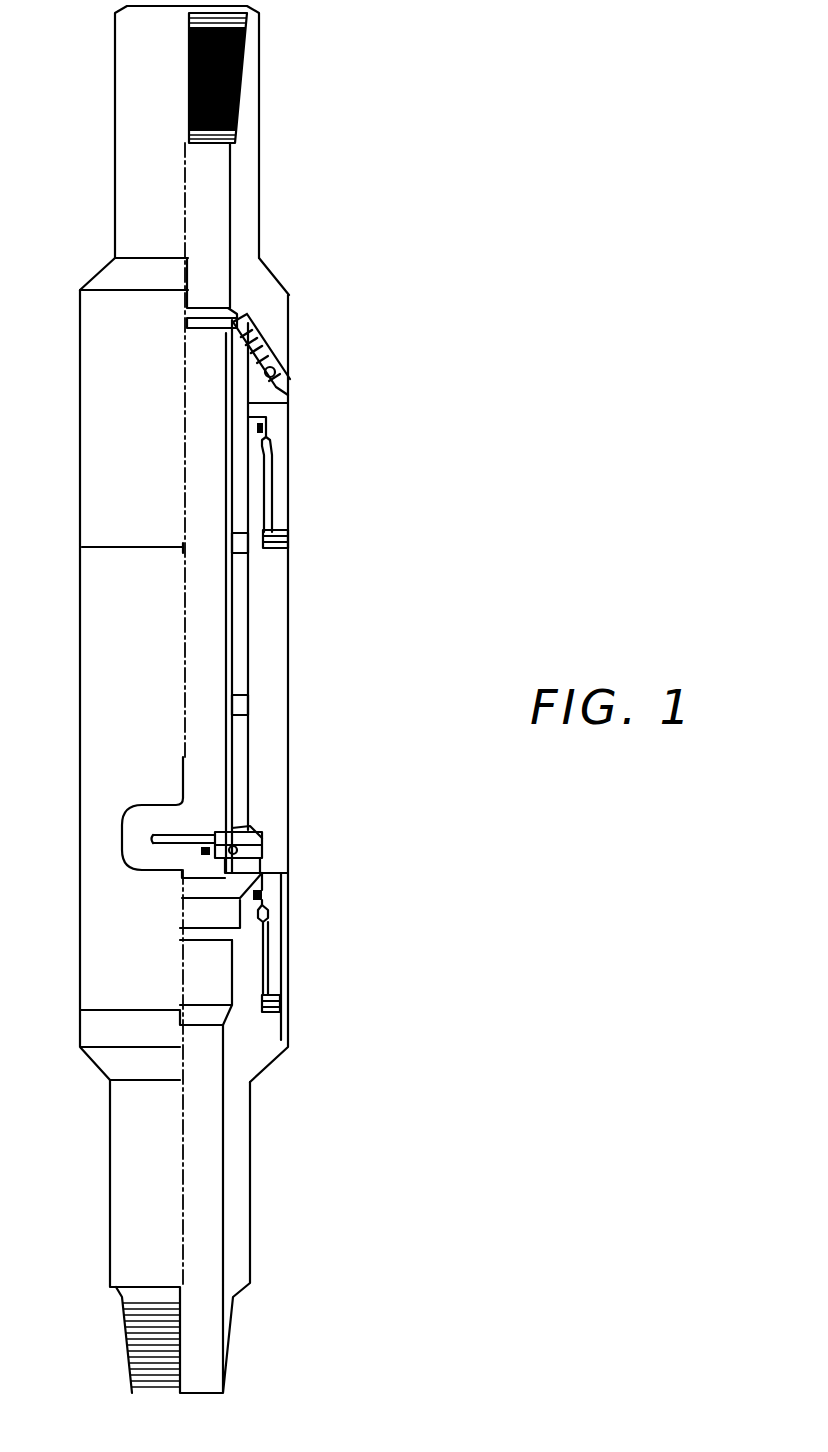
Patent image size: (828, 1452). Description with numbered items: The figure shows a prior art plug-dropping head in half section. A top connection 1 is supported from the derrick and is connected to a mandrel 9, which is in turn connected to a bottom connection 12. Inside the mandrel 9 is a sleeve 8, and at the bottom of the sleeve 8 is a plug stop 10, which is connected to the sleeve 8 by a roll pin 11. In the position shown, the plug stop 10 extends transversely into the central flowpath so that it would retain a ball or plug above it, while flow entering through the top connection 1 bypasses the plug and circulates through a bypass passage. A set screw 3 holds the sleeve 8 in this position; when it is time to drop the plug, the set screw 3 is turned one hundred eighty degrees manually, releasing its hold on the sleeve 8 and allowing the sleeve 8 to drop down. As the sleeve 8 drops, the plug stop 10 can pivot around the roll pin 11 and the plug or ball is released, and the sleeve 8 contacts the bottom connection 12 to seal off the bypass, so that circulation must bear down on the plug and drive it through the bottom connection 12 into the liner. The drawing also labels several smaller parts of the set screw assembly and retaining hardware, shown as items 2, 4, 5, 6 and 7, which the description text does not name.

The top connection 1 is at (259, 211).
The angled port fitting 2 is at (282, 356).
The set screw 3 is at (283, 370).
The plug 4 is at (281, 374).
The seal 5 is at (279, 376).
The retainer pin 6 is at (266, 430).
The spring strip 7 is at (288, 531).
The sleeve 8 is at (232, 643).
The mandrel 9 is at (289, 719).
The plug stop 10 is at (212, 832).
The roll pin 11 is at (262, 852).
The bottom connection 12 is at (250, 1108).